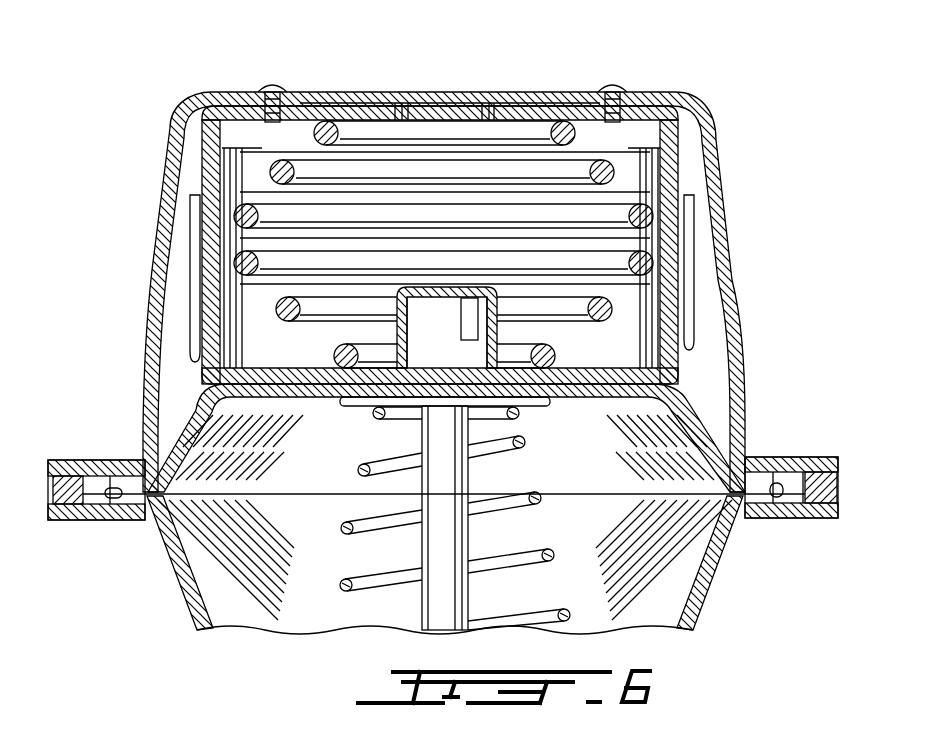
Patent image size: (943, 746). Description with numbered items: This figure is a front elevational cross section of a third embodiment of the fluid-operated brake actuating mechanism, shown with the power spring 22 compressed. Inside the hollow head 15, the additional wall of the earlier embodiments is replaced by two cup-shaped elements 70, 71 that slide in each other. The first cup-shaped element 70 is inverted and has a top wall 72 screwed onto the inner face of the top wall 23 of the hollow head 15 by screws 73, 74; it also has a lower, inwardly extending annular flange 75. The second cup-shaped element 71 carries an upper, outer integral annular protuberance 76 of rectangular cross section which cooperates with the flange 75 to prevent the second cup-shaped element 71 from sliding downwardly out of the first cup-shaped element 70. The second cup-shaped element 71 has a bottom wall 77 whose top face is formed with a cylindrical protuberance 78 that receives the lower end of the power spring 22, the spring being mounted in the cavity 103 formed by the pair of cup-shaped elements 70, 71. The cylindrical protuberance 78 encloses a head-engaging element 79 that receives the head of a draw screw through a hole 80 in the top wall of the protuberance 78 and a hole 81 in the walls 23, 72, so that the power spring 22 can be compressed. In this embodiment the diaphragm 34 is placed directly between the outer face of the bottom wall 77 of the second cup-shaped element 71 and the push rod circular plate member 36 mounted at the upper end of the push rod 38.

The hollow head 15 is at (728, 236).
The power spring 22 is at (690, 95).
The top wall 23 is at (556, 103).
The diaphragm 34 is at (187, 443).
The push rod circular plate member 36 is at (527, 400).
The push rod 38 is at (440, 540).
The first cup-shaped element 70 is at (194, 206).
The second cup-shaped element 71 is at (677, 380).
The top wall 72 is at (297, 107).
The screw 73 is at (272, 88).
The screw 74 is at (614, 88).
The annular flange 75 is at (684, 340).
The annular protuberance 76 is at (706, 165).
The bottom wall 77 is at (563, 376).
The cylindrical protuberance 78 is at (397, 328).
The head-engaging element 79 is at (425, 357).
The hole 80 is at (440, 295).
The hole 81 is at (418, 112).
The cavity 103 is at (222, 132).